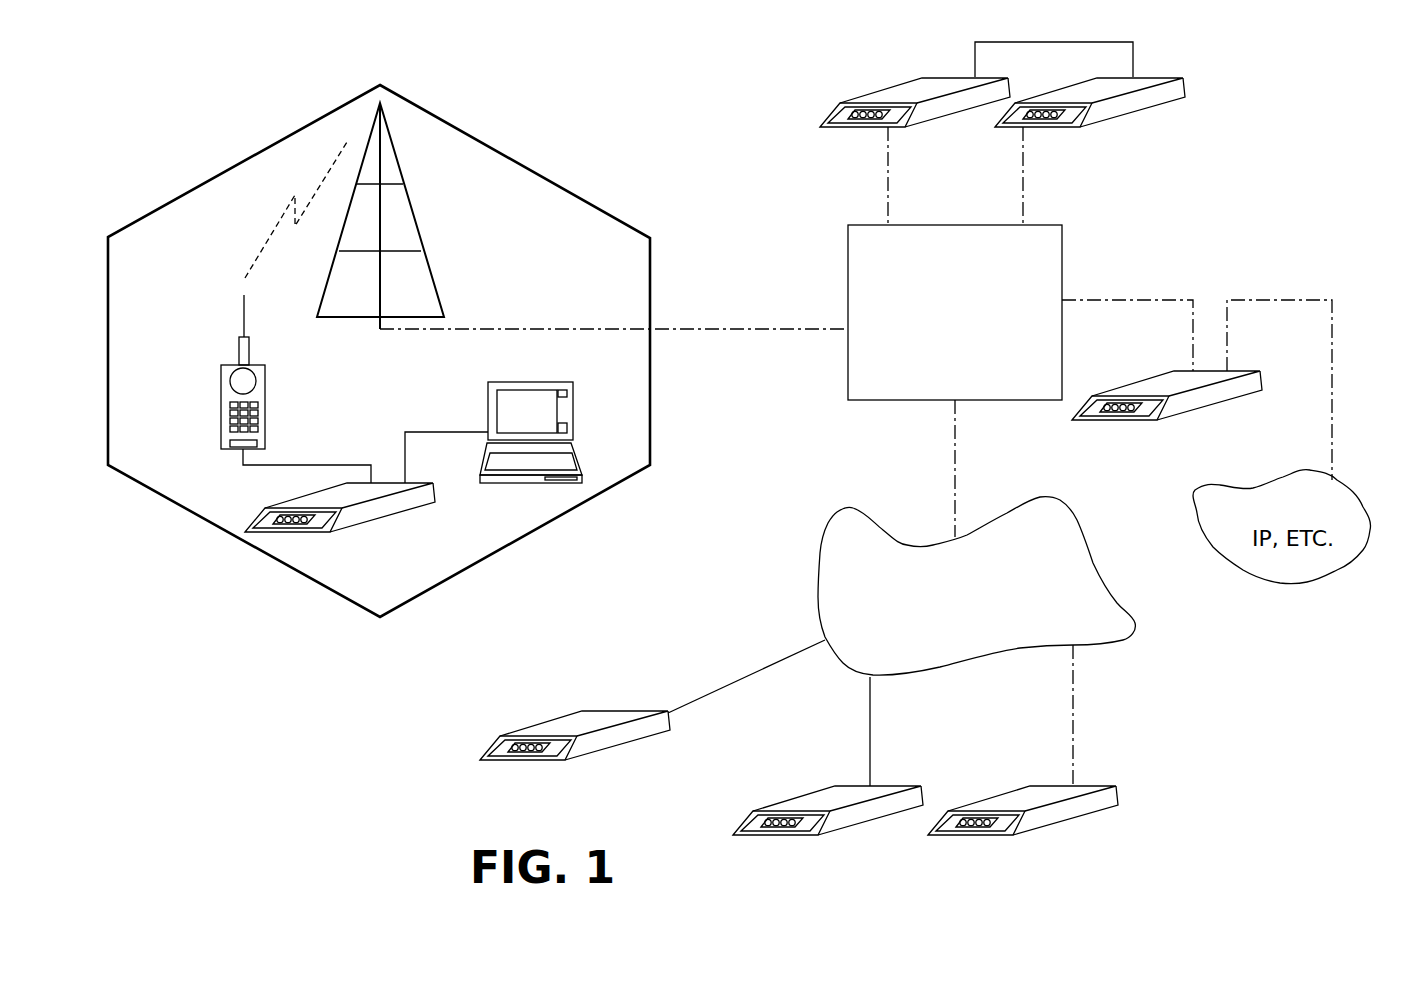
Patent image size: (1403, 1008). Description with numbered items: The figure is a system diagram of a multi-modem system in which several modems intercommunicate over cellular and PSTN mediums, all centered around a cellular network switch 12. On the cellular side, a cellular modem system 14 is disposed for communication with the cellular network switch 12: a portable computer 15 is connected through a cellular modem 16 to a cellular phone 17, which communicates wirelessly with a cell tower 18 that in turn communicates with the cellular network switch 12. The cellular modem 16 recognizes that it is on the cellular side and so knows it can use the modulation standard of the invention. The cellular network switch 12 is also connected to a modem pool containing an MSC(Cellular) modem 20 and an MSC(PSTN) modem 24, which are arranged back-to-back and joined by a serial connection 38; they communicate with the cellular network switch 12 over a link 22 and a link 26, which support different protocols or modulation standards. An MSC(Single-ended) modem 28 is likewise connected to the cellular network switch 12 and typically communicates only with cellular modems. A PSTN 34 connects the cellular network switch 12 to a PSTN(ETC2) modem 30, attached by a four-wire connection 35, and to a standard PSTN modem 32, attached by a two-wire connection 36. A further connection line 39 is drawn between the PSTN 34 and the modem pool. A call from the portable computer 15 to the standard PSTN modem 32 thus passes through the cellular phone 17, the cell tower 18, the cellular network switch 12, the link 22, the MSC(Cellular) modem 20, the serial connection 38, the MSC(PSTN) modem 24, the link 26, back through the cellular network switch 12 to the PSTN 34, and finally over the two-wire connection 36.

The cellular network switch 12 is at (888, 400).
The cellular modem system 14 is at (227, 533).
The portable computer 15 is at (528, 483).
The cellular modem 16 is at (378, 520).
The cellular phone 17 is at (267, 378).
The cell tower 18 is at (428, 261).
The MSC(Cellular) modem 20 is at (965, 73).
The link 22 is at (892, 208).
The MSC(PSTN) modem 24 is at (1183, 57).
The link 26 is at (1027, 210).
The MSC(Single-ended) modem 28 is at (1117, 422).
The PSTN(ETC2) modem 30 is at (997, 838).
The standard PSTN modem 32 is at (798, 840).
The PSTN 34 is at (818, 610).
The four-wire connection 35 is at (1073, 758).
The two-wire connection 36 is at (870, 748).
The RS-232 connection 38 is at (552, 765).
The connection line 39 is at (730, 690).